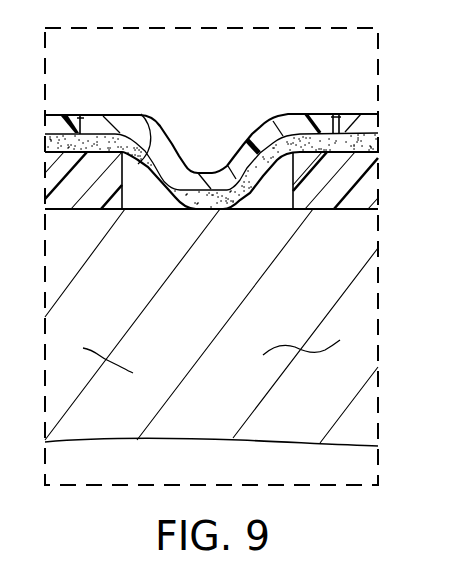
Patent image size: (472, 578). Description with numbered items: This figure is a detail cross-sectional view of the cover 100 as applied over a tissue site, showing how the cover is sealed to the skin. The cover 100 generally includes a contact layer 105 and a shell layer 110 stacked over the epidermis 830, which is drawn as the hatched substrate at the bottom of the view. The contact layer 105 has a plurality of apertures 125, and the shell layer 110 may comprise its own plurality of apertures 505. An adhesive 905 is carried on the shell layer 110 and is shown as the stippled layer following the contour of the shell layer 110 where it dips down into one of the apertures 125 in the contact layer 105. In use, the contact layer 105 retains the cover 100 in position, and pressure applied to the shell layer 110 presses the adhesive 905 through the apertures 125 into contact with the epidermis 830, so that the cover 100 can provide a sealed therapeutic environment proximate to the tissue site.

The cover 100 is at (288, 104).
The contact layer 105 is at (326, 202).
The shell layer 110 is at (221, 171).
The apertures 125 is at (140, 114).
The apertures 505 is at (95, 117).
The epidermis 830 is at (227, 397).
The adhesive 905 is at (256, 117).